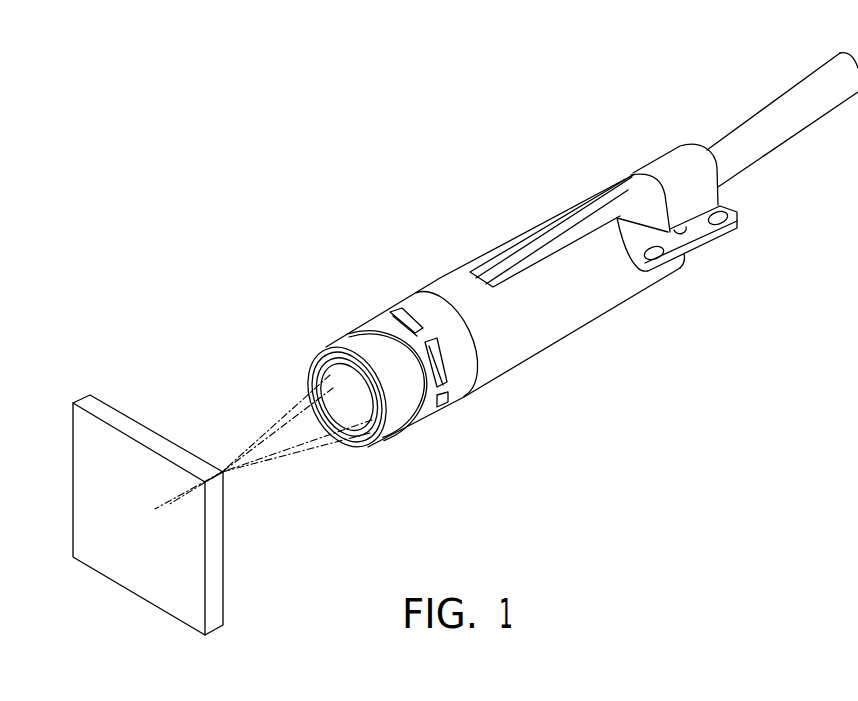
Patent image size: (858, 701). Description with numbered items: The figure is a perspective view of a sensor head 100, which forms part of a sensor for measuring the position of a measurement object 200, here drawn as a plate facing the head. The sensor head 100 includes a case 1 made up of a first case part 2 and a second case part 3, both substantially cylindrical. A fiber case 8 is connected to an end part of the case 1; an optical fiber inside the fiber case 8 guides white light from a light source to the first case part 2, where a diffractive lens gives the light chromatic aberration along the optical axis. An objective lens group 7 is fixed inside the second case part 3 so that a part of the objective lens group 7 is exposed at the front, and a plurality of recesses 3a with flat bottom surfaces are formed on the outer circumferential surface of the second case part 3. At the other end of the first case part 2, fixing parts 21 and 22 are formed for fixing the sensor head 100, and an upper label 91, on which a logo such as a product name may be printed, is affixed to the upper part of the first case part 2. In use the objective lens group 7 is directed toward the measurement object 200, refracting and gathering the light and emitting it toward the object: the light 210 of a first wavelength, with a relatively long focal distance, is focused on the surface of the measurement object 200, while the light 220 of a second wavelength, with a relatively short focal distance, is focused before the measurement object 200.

The sensor head 100 is at (552, 106).
The case 1 is at (472, 495).
The first case part 2 is at (520, 367).
The second case part 3 is at (462, 402).
The recesses 3a is at (407, 305).
The objective lens group 7 is at (345, 347).
The fiber case 8 is at (747, 115).
The fixing part 21 is at (700, 247).
The fixing part 22 is at (607, 187).
The upper label 91 is at (505, 265).
The measurement object 200 is at (135, 420).
The light of a first wavelength 210 is at (223, 448).
The light of a second wavelength 220 is at (298, 447).